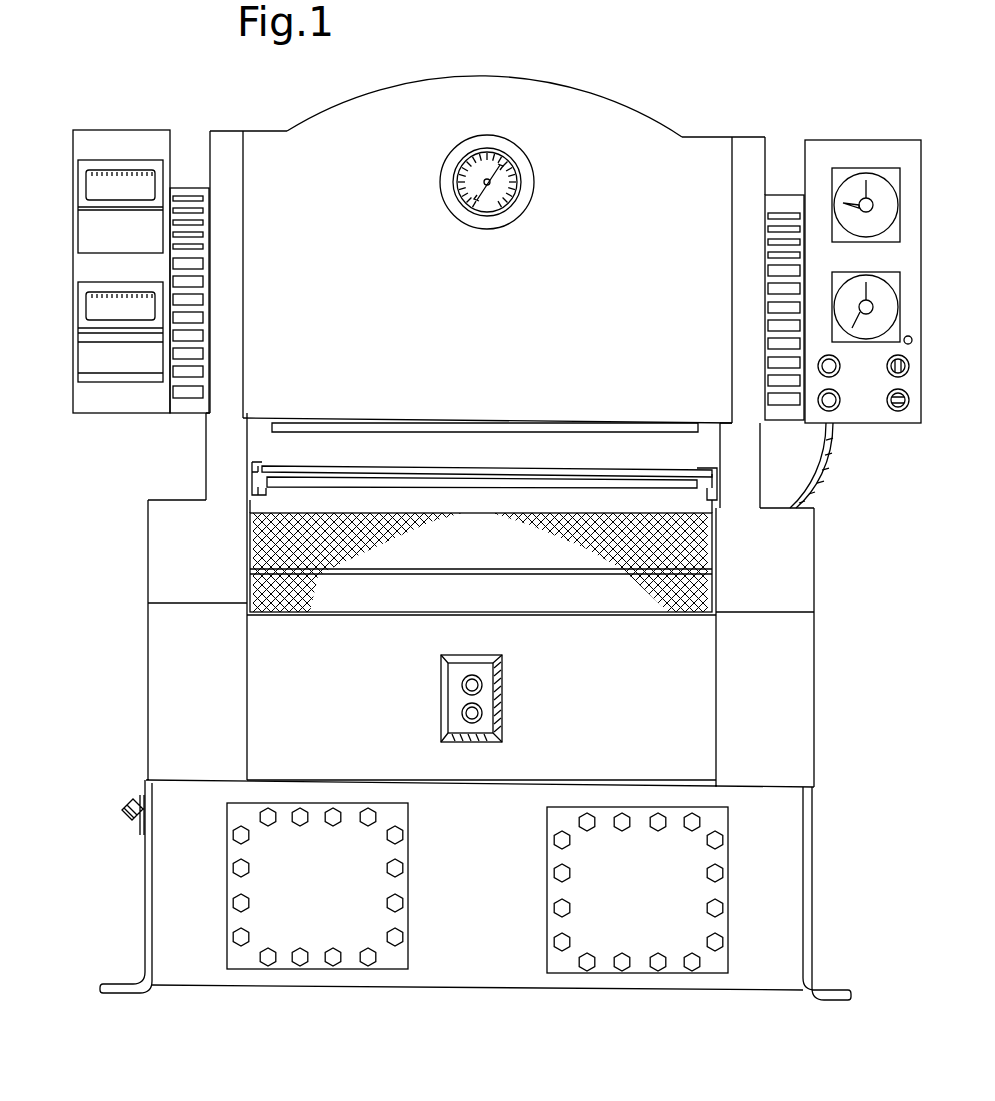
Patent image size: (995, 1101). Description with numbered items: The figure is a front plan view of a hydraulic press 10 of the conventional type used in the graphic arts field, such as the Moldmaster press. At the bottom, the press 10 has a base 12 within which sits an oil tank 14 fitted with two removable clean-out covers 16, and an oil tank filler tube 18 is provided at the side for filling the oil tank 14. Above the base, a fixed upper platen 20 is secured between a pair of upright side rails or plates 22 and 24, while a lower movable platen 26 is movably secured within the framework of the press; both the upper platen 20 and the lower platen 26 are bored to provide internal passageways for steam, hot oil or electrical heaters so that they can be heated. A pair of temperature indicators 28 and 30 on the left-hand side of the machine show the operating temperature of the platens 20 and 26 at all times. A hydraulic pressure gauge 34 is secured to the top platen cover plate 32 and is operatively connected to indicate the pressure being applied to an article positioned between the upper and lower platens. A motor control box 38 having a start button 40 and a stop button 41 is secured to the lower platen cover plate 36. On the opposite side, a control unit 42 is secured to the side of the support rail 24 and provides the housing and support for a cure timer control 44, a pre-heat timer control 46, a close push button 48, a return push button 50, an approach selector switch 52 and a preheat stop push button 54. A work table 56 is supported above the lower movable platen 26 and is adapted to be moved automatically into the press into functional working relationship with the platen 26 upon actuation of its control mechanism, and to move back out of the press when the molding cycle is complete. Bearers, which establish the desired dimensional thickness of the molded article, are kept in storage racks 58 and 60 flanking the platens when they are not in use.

The press 10 is at (704, 118).
The base 12 is at (790, 678).
The oil tank 14 is at (478, 950).
The removable clean-out covers 16 is at (316, 932).
The oil tank filler tube 18 is at (127, 808).
The fixed upper platen 20 is at (520, 433).
The upright side rail 22 is at (226, 140).
The upright side rail 24 is at (743, 146).
The lower movable platen 26 is at (548, 508).
The temperature indicator 28 is at (133, 175).
The temperature indicator 30 is at (130, 312).
The top platen cover plate 32 is at (587, 113).
The hydraulic pressure gauge 34 is at (508, 140).
The lower platen cover plate 36 is at (700, 650).
The motor control box 38 is at (503, 700).
The start button 40 is at (461, 683).
The stop button 41 is at (461, 714).
The control unit 42 is at (865, 150).
The cure timer control 44 is at (893, 177).
The pre-heat timer control 46 is at (833, 282).
The close push button 48 is at (841, 363).
The return push button 50 is at (841, 396).
The approach selector switch 52 is at (891, 378).
The preheat stop push button 54 is at (898, 412).
The work table 56 is at (648, 475).
The storage rack 58 is at (195, 290).
The storage rack 60 is at (778, 273).